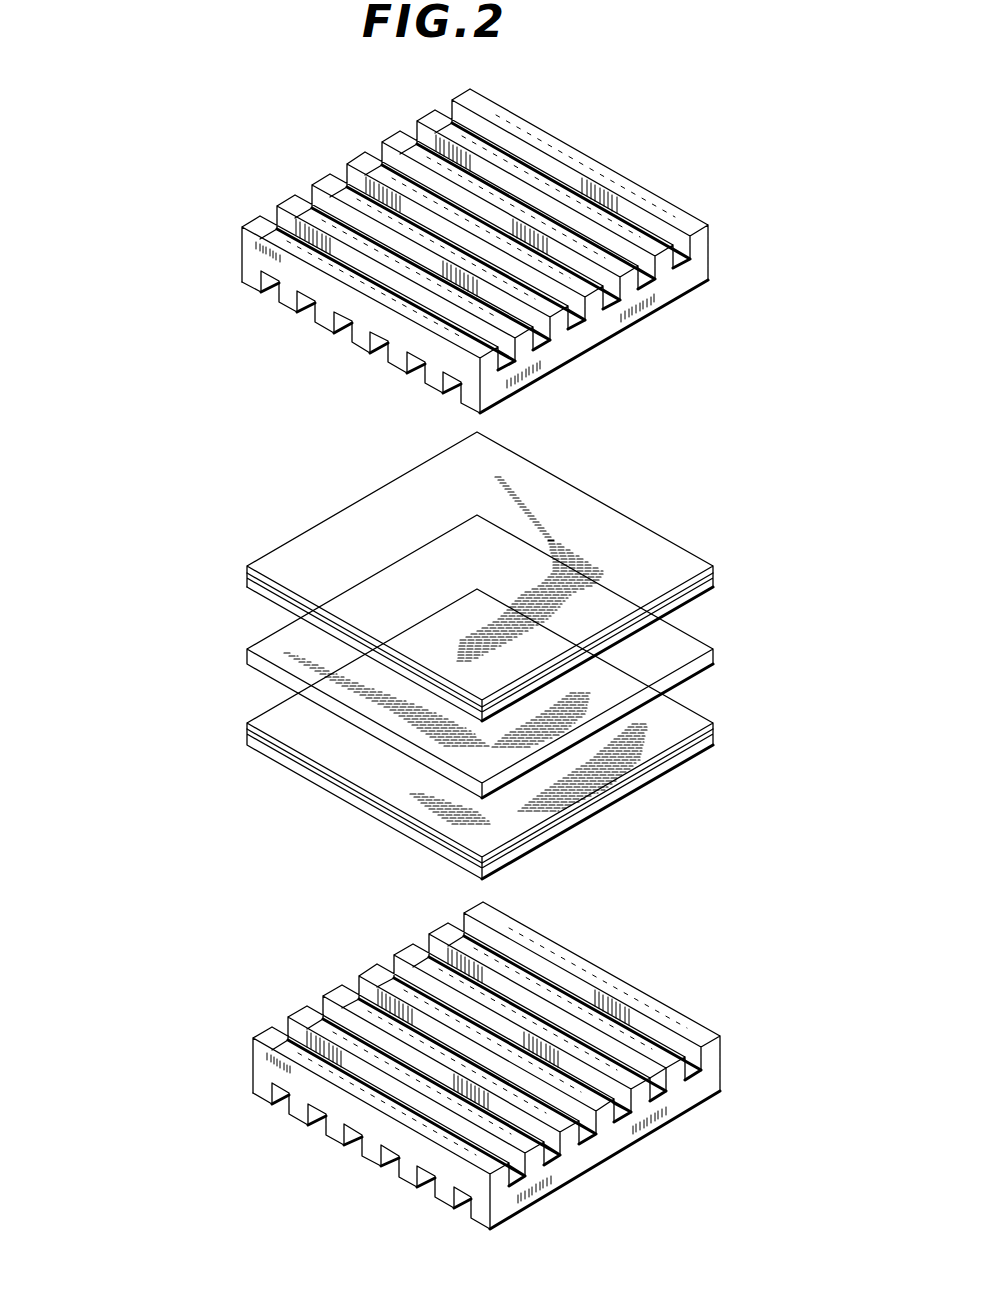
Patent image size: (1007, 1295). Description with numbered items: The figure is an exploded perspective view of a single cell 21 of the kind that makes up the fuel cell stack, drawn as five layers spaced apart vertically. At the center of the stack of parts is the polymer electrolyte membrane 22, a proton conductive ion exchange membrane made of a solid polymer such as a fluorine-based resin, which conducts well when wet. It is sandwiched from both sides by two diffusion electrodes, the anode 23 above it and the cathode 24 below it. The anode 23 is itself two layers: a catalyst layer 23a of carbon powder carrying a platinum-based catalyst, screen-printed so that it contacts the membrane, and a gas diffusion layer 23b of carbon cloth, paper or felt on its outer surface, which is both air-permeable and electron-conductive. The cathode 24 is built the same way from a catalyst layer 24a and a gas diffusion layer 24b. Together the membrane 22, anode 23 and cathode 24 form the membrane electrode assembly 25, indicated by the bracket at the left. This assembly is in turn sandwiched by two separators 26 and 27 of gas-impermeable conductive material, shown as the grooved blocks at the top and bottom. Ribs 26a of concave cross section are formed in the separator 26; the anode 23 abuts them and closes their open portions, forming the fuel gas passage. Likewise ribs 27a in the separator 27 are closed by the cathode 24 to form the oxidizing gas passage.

The cell 21 is at (106, 183).
The polymer electrolyte membrane 22 is at (247, 656).
The anode 23 is at (163, 546).
The catalyst layer 23a is at (247, 585).
The gas diffusion layer 23b is at (247, 573).
The cathode 24 is at (164, 707).
The catalyst layer 24a is at (247, 730).
The gas diffusion layer 24b is at (247, 740).
The membrane electrode assembly 25 is at (123, 562).
The separator 26 is at (242, 257).
The ribs 26a is at (307, 310).
The separator 27 is at (722, 1077).
The ribs 27a is at (673, 1068).